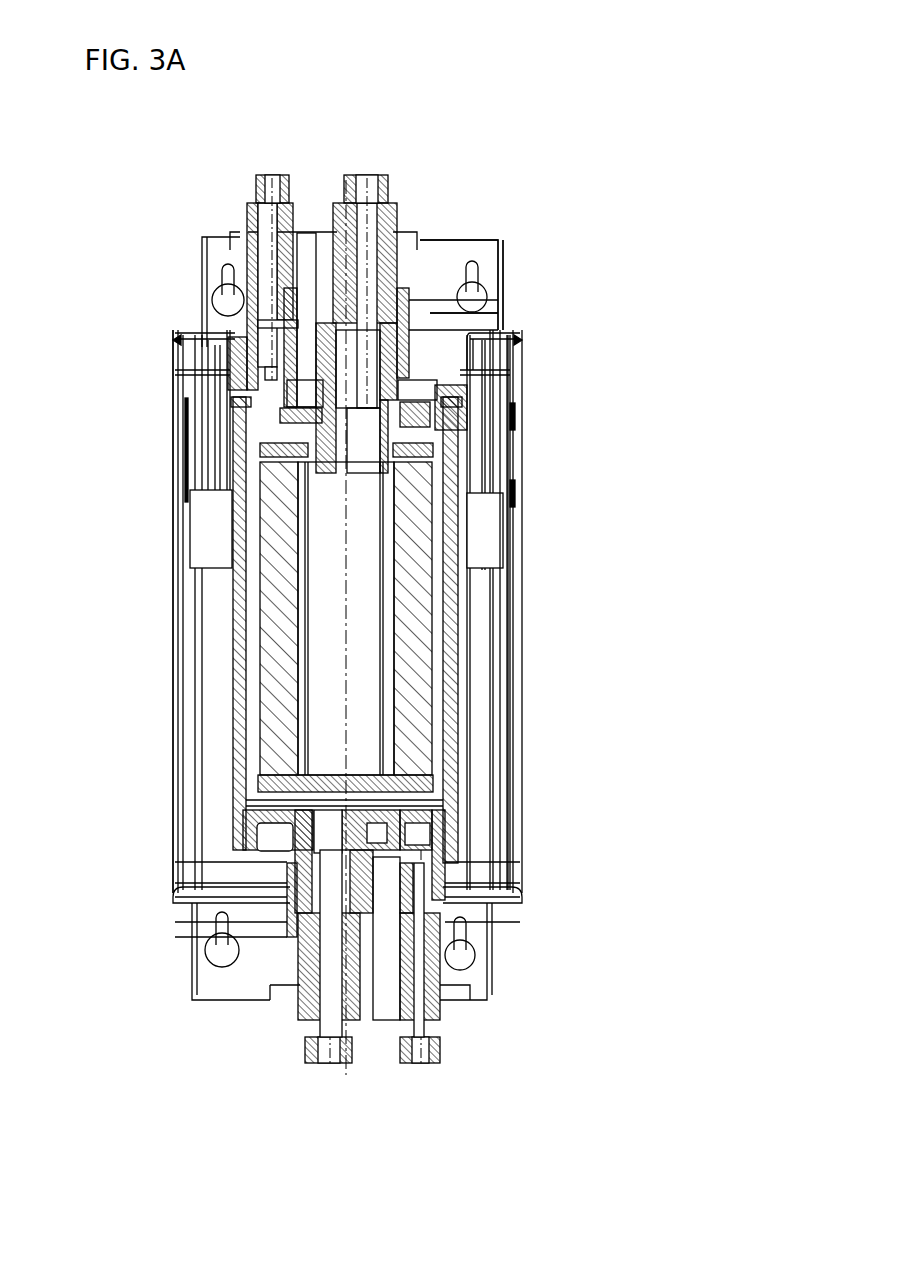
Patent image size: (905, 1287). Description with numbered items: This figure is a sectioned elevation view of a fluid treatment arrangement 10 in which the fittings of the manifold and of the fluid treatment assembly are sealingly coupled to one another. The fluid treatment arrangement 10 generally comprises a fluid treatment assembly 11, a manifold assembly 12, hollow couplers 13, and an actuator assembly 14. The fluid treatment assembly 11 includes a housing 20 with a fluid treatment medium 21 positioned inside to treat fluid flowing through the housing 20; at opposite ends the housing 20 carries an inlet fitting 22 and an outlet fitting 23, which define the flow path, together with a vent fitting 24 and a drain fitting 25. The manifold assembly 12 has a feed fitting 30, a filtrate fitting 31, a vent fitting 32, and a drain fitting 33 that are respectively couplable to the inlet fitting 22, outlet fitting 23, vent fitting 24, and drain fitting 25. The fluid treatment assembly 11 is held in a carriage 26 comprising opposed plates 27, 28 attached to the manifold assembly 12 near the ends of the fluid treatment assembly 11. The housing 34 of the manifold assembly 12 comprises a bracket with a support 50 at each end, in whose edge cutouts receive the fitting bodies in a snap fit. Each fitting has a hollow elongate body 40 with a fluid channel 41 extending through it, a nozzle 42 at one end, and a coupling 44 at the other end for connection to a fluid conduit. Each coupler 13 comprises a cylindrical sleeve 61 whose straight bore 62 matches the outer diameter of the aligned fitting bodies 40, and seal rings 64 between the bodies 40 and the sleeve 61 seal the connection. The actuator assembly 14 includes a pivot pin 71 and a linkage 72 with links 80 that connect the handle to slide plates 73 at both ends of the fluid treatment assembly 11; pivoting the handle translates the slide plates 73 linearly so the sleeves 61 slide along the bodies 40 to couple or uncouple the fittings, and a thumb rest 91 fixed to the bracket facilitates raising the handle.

The fluid treatment arrangement 10 is at (134, 540).
The fluid treatment assembly 11 is at (262, 691).
The manifold assembly 12 is at (470, 240).
The hollow coupler 13 is at (205, 281).
The actuator assembly 14 is at (520, 576).
The housing 20 is at (258, 729).
The fluid treatment medium 21 is at (250, 751).
The inlet fitting 22 is at (225, 842).
The outlet fitting 23 is at (505, 366).
The vent fitting 24 is at (212, 366).
The drain fitting 25 is at (470, 881).
The carriage 26 is at (215, 451).
The plate 27 is at (385, 456).
The plate 28 is at (455, 802).
The feed fitting 30 is at (300, 1025).
The filtrate fitting 31 is at (397, 232).
The vent fitting 32 is at (247, 215).
The drain fitting 33 is at (445, 1020).
The housing 34 is at (500, 242).
The body 40 is at (230, 240).
The fluid channel 41 is at (276, 175).
The nozzle 42 is at (176, 340).
The coupling 44 is at (256, 190).
The support 50 is at (292, 300).
The sleeve 61 is at (226, 291).
The bore 62 is at (215, 381).
The seal ring 64 is at (215, 351).
The pivot pin 71 is at (505, 426).
The linkage 72 is at (500, 396).
The slide plate 73 is at (310, 322).
The link 80 is at (175, 640).
The thumb rest 91 is at (500, 311).